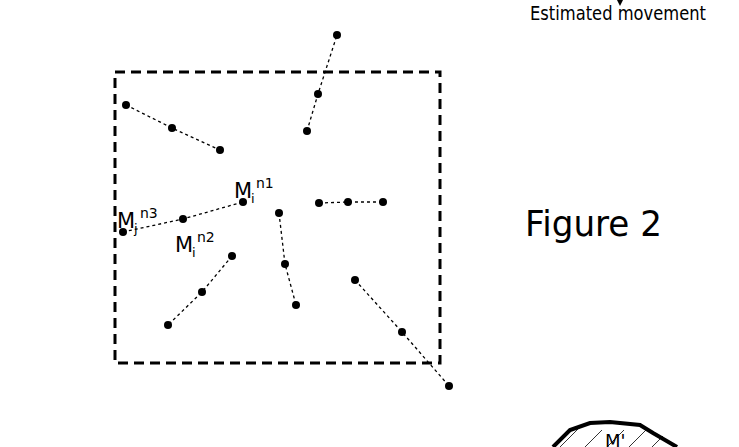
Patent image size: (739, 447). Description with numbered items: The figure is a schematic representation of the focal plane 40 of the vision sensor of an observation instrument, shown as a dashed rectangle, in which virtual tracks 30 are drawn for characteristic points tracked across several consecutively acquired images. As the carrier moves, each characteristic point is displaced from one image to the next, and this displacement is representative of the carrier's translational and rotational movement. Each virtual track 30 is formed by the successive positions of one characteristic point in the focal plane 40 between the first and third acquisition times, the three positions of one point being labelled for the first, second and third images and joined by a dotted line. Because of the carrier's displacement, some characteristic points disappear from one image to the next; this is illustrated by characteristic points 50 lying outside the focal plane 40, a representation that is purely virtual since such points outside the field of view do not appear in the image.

The virtual track 30 is at (241, 219).
The focal plane 40 is at (115, 128).
The characteristic point outside the focal plane 50 is at (334, 34).